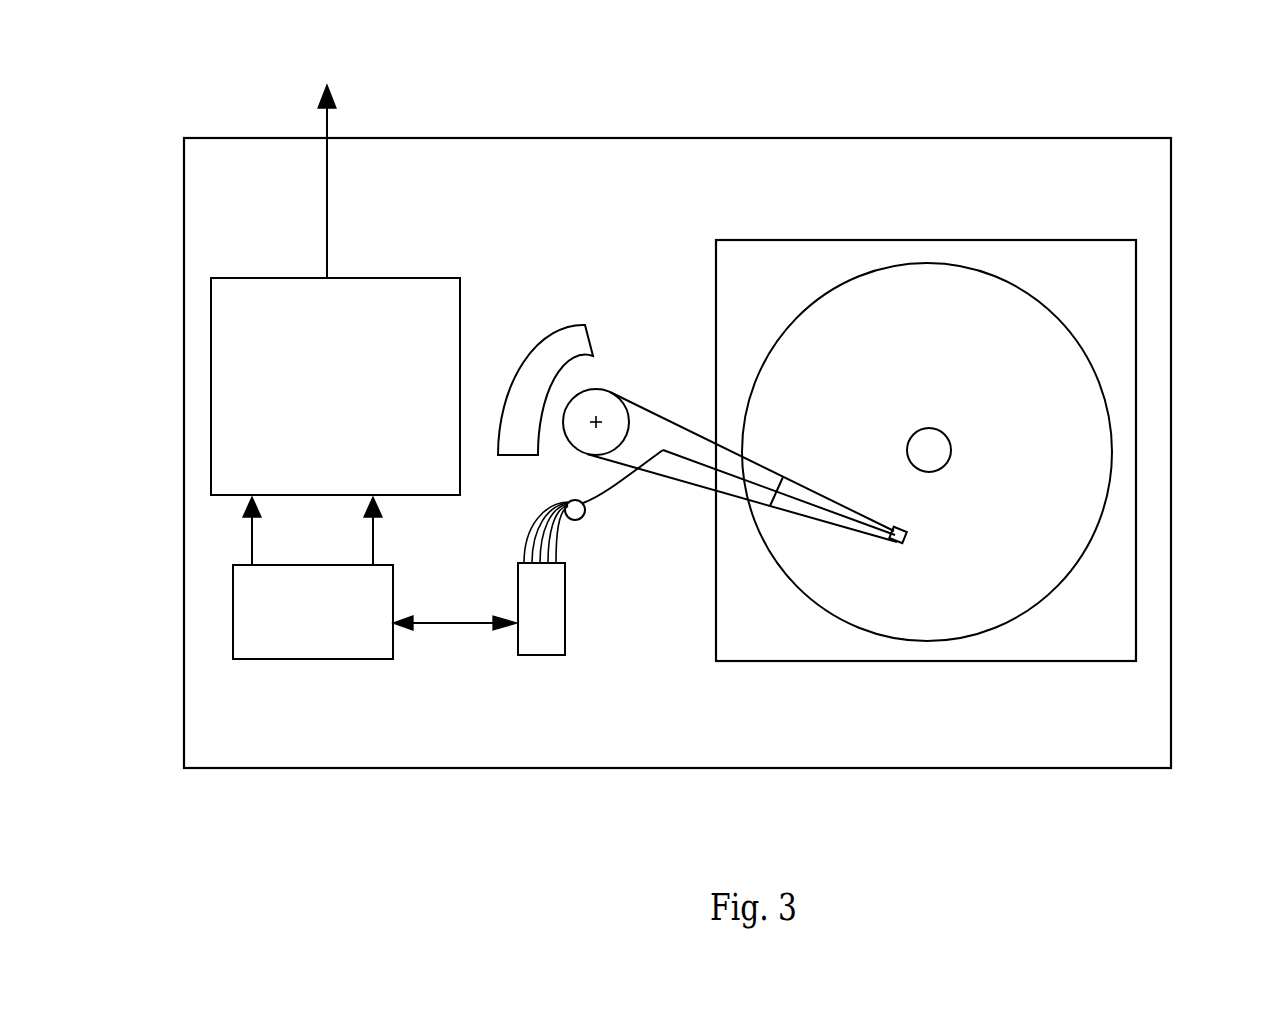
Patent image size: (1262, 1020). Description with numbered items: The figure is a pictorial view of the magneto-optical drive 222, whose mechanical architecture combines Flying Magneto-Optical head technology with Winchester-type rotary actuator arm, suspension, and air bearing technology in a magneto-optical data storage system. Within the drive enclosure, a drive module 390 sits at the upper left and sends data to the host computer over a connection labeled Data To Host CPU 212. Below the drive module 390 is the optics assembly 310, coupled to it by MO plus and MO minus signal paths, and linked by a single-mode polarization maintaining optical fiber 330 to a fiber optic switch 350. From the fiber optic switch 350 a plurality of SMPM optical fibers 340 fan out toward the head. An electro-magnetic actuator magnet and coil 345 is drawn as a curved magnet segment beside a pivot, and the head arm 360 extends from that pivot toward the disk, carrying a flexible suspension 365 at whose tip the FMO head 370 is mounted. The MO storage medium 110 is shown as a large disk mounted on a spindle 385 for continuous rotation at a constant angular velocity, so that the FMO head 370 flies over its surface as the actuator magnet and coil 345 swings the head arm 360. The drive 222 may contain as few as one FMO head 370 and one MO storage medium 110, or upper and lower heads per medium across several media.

The MO storage media 110 is at (1053, 435).
The host CPU data path 212 is at (335, 164).
The magneto-optical drive 222 is at (1033, 867).
The optics assembly 310 is at (282, 643).
The Single-Mode Polarization Maintaining optical fiber 330 is at (458, 627).
The SMPM optical fibers 340 is at (565, 538).
The actuator magnet and coil 345 is at (575, 345).
The fiber optic switch 350 is at (555, 637).
The head arm 360 is at (760, 475).
The suspension 365 is at (814, 499).
The FMO head 370 is at (908, 541).
The spindle 385 is at (936, 454).
The drive module 390 is at (417, 278).